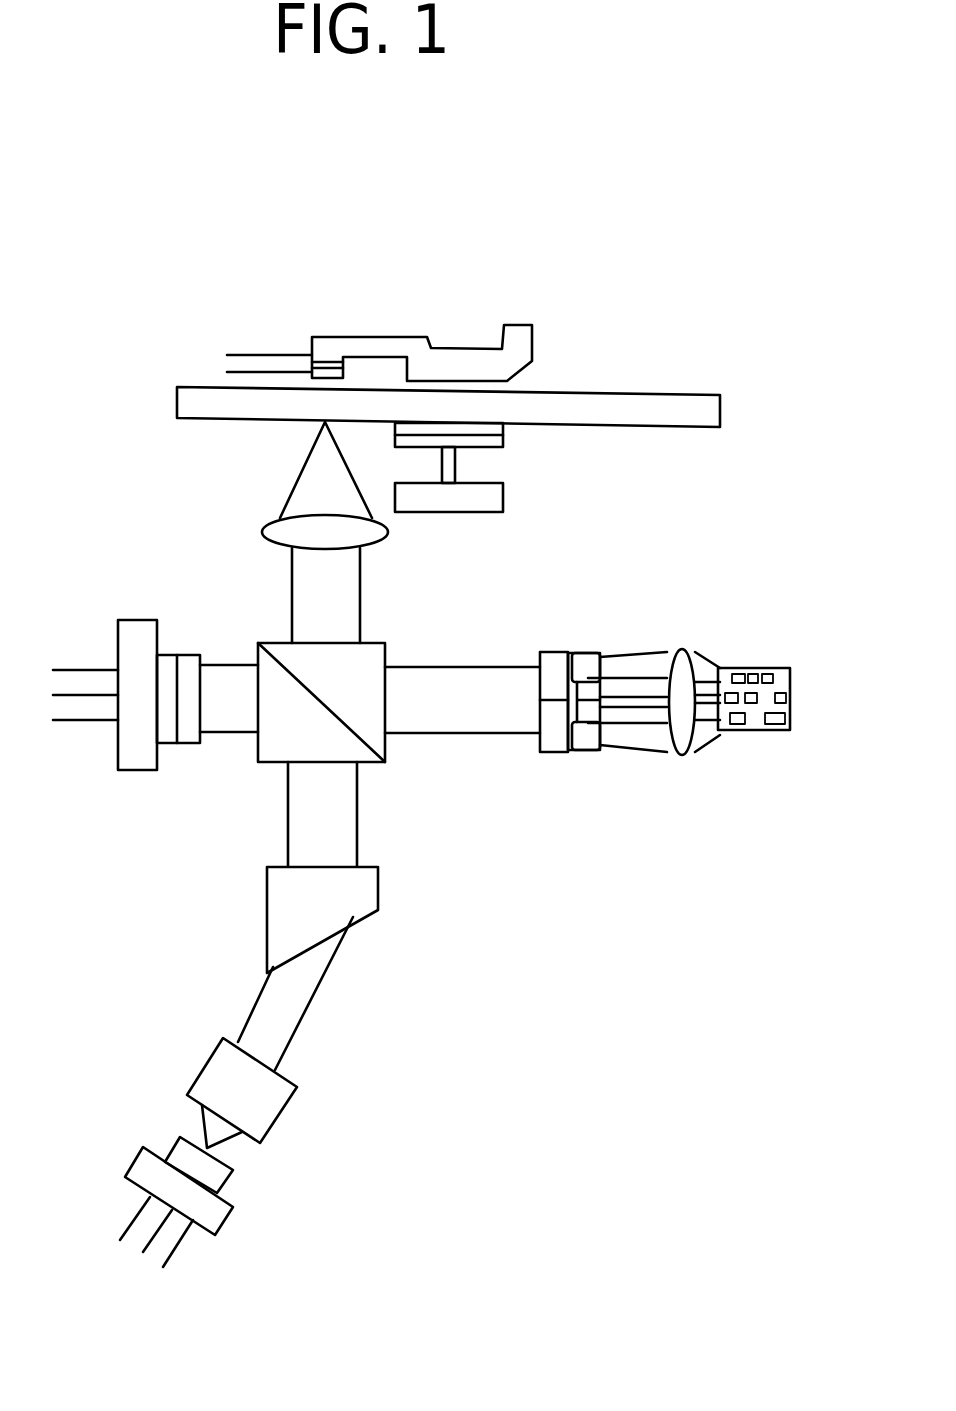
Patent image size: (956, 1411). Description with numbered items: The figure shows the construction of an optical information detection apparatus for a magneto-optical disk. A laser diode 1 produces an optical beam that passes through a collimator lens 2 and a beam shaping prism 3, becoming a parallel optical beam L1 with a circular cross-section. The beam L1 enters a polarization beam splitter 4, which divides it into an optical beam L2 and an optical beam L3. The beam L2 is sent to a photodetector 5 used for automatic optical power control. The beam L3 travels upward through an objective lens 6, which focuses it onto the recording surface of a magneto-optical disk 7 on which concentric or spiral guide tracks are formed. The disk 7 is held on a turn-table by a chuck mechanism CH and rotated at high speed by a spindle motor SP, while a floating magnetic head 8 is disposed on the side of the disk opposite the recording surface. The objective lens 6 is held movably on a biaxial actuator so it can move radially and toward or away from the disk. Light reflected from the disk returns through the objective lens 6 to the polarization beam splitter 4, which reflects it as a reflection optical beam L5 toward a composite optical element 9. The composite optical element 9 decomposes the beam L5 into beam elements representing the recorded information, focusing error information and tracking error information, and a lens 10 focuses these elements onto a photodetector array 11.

The laser diode 1 is at (232, 1218).
The collimator lens 2 is at (300, 1108).
The beam shaping prism 3 is at (265, 907).
The polarization beam splitter 4 is at (387, 640).
The photodetector 5 is at (118, 620).
The objective lens 6 is at (262, 530).
The magneto-optical disk 7 is at (177, 402).
The floating magnetic head 8 is at (337, 333).
The composite optical element 9 is at (548, 752).
The lens 10 is at (683, 648).
The photodetector array 11 is at (777, 732).
The chuck mechanism CH is at (503, 446).
The spindle motor SP is at (503, 500).
The parallel optical beam L1 is at (322, 814).
The optical beam L2 is at (229, 698).
The optical beam L3 is at (326, 595).
The reflection optical beam L5 is at (462, 700).